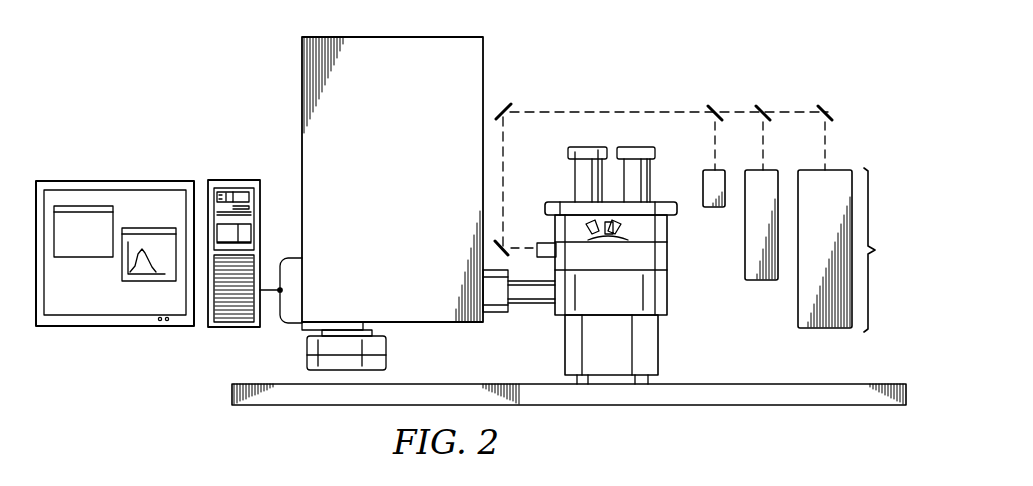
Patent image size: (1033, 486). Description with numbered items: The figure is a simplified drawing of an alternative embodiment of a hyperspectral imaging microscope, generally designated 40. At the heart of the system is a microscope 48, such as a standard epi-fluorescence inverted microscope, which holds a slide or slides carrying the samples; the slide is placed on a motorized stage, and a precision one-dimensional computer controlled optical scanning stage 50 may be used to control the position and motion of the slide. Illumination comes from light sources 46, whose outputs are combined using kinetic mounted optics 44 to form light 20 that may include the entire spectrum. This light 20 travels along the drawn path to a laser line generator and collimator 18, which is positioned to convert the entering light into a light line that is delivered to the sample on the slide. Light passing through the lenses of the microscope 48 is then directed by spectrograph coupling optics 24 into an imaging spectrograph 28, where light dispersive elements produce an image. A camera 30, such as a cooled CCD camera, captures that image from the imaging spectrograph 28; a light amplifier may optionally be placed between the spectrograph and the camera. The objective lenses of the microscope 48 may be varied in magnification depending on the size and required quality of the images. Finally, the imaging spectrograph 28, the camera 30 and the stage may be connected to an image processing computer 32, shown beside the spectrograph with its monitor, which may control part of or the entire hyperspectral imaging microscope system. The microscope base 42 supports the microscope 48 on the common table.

The laser line generator and collimator 18 is at (545, 245).
The light 20 is at (608, 112).
The spectrograph coupling optics 24 is at (497, 313).
The imaging spectrograph 28 is at (301, 70).
The camera 30 is at (307, 355).
The image processing computer 32 is at (232, 178).
The hyperspectral imaging microscope 40 is at (681, 60).
The microscope base 42 is at (659, 340).
The kinetic mounted optics 44 is at (832, 110).
The light sources 46 is at (803, 250).
The microscope 48 is at (642, 257).
The precision 1-D computer controlled optical scanning stage 50 is at (660, 202).